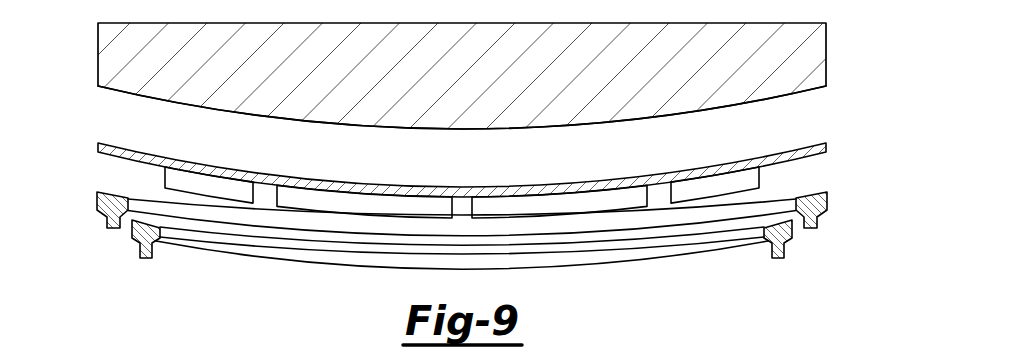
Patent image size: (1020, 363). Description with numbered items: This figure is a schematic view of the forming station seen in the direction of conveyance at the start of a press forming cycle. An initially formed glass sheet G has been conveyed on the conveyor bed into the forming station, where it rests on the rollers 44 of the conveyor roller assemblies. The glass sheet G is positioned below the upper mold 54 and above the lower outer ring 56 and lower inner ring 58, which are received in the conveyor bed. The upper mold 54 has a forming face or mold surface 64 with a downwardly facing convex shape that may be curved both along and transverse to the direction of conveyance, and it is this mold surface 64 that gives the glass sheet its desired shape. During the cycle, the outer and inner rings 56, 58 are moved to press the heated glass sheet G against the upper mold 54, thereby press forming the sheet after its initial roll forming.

The upper mold 54 is at (826, 54).
The mold surface 64 is at (110, 98).
The glass sheet G is at (779, 153).
The roller 44 is at (361, 213).
The outer ring 56 is at (828, 226).
The inner ring 58 is at (797, 253).